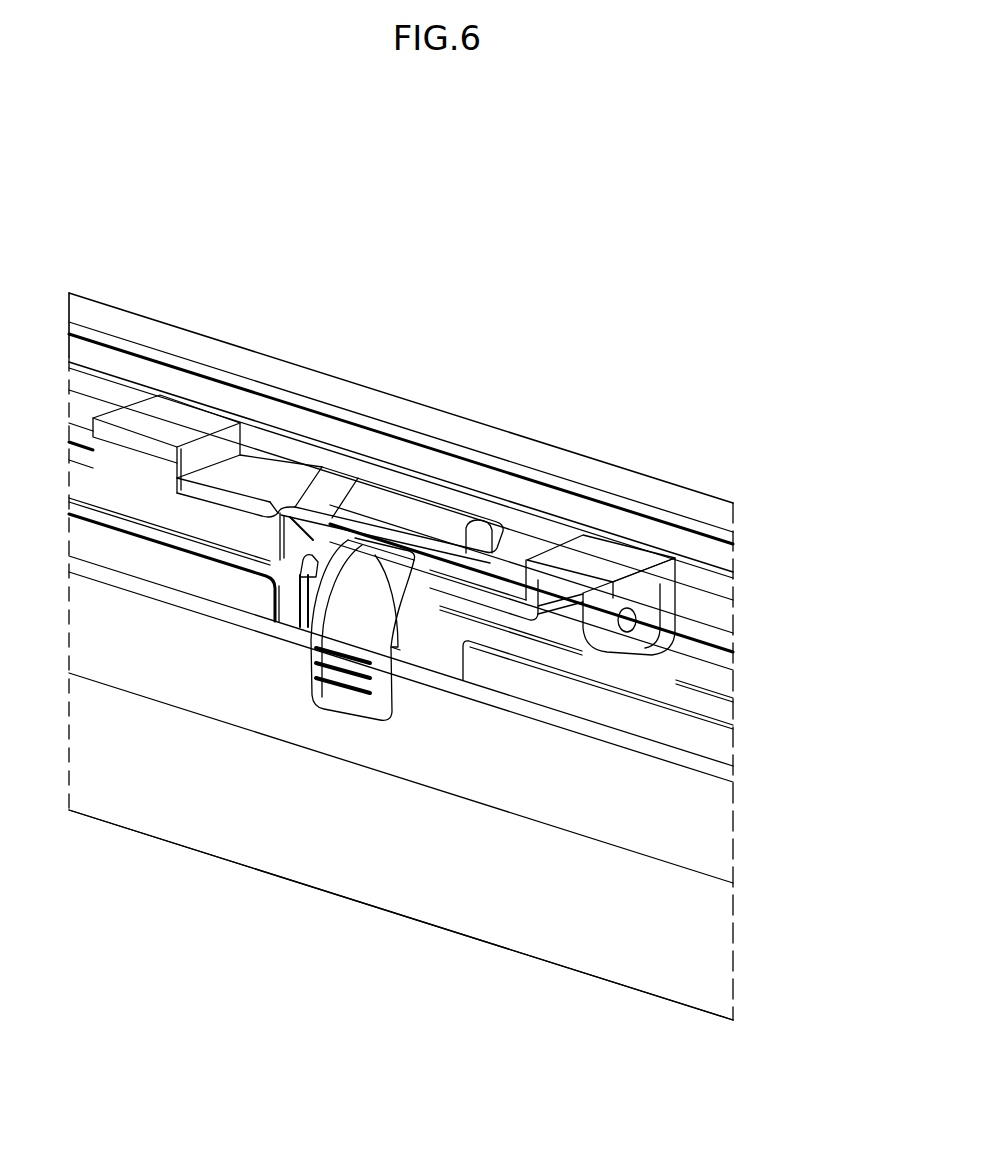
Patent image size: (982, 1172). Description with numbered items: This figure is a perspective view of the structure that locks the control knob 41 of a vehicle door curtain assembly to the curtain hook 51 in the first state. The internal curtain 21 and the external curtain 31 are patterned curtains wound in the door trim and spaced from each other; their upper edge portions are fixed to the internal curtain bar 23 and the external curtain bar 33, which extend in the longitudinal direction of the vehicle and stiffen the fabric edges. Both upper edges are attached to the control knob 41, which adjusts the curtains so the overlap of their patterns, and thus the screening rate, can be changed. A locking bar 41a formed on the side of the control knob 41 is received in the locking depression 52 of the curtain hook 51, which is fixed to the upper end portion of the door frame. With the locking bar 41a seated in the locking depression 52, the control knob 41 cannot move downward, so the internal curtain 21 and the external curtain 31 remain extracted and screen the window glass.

The internal curtain 21 is at (697, 928).
The internal curtain bar 23 is at (695, 828).
The external curtain 31 is at (703, 740).
The external curtain bar 33 is at (703, 708).
The control knob 41 is at (338, 647).
The locking bar 41a is at (315, 565).
The curtain hook 51 is at (255, 475).
The locking depression 52 is at (300, 597).